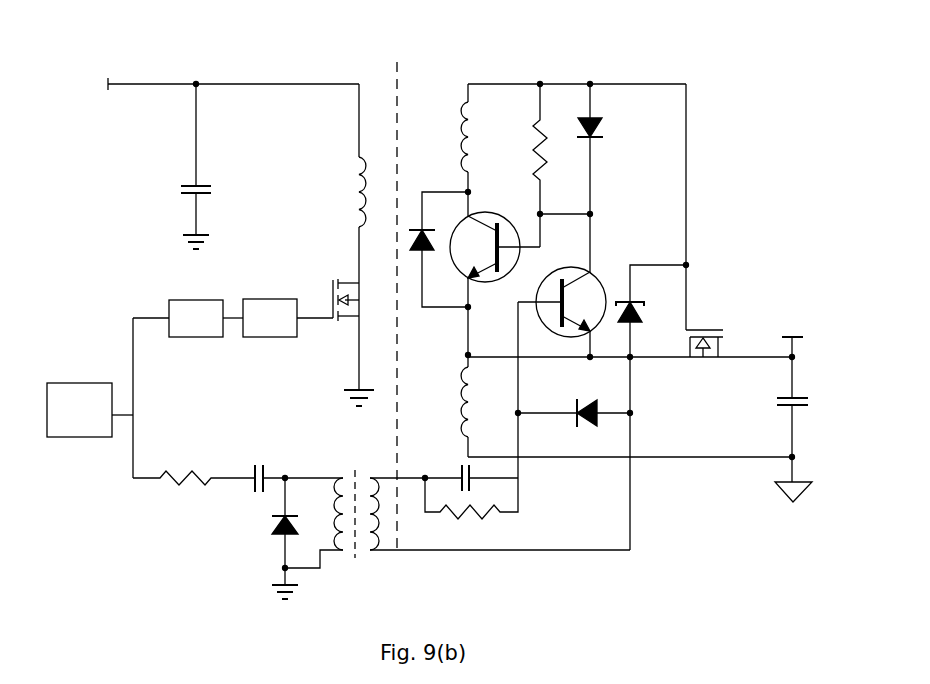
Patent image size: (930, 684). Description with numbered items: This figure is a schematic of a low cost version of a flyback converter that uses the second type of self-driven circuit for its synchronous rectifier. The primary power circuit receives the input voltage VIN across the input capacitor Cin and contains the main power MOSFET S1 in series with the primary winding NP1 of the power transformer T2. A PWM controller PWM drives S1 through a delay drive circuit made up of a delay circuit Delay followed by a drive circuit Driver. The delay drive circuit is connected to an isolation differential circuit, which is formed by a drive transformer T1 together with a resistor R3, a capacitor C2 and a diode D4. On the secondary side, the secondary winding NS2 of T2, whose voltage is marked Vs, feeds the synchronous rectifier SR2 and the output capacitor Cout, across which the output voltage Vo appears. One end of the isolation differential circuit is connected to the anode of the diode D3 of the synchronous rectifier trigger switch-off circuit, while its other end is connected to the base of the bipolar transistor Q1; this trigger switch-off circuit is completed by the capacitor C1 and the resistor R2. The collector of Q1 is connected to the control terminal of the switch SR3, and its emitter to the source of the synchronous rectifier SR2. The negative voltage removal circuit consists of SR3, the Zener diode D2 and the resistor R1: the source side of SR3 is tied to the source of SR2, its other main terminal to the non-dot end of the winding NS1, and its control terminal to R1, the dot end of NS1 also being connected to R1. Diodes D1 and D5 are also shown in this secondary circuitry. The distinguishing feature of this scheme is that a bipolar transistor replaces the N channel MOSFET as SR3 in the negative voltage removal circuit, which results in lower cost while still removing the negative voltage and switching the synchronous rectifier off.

The input voltage terminal VIN is at (84, 85).
The input capacitor Cin is at (213, 166).
The primary winding NP1 is at (344, 183).
The main power MOSFET S1 is at (335, 342).
The PWM controller PWM is at (90, 410).
The delay circuit Delay is at (188, 318).
The drive circuit Driver is at (270, 318).
The resistor R3 is at (194, 462).
The capacitor C2 is at (296, 466).
The diode D4 is at (287, 538).
The signal transformer T1 is at (477, 500).
The capacitor C1 is at (471, 469).
The resistor R2 is at (471, 510).
The main transformer T2 is at (441, 115).
The secondary winding NS1 is at (488, 156).
The secondary winding NS2 is at (605, 406).
The secondary voltage node Vs is at (500, 390).
The resistor R1 is at (522, 165).
The diode D1 is at (606, 178).
The transistor of negative voltage removal circuit SR3 is at (495, 274).
The diode D5 is at (438, 249).
The bi-polar transistor Q1 is at (562, 326).
The Zener diode D2 is at (652, 407).
The diode D3 is at (574, 425).
The synchronous rectifier SR2 is at (705, 234).
The output voltage terminal Vo is at (792, 360).
The output capacitor Cout is at (765, 449).